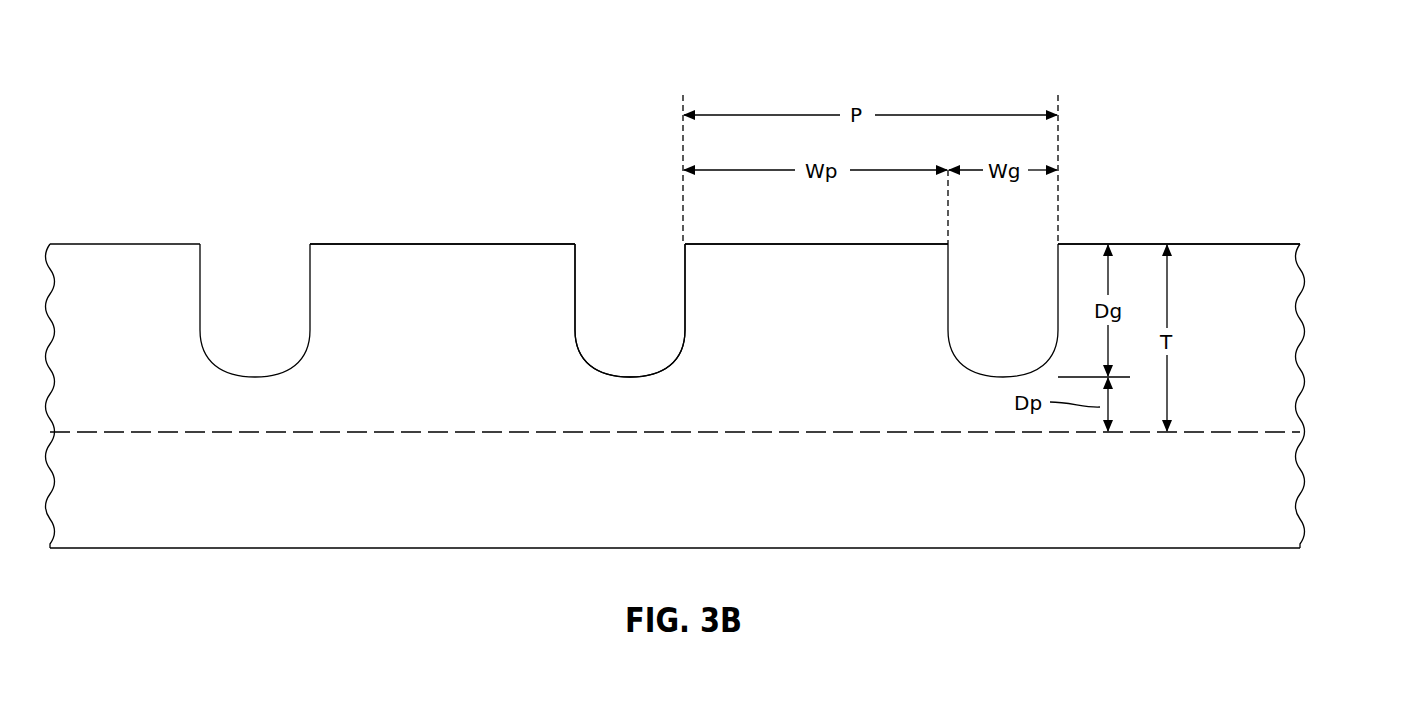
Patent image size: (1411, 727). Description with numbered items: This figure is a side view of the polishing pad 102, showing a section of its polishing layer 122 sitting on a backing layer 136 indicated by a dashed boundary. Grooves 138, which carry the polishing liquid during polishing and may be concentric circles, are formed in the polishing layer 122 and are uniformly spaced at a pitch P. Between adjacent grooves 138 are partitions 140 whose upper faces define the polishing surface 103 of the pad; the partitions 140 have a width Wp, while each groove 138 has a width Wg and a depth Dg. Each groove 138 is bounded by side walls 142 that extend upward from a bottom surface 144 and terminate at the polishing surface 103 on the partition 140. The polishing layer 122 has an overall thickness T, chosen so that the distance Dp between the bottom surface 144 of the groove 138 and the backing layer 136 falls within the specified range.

The polishing pad 102 is at (232, 60).
The polishing surface 103 is at (256, 130).
The polishing layer 122 is at (1290, 372).
The backing layer 136 is at (1277, 490).
The grooves 138 is at (254, 250).
The partitions 140 is at (422, 244).
The side walls 142 is at (574, 283).
The bottom surface 144 is at (625, 378).